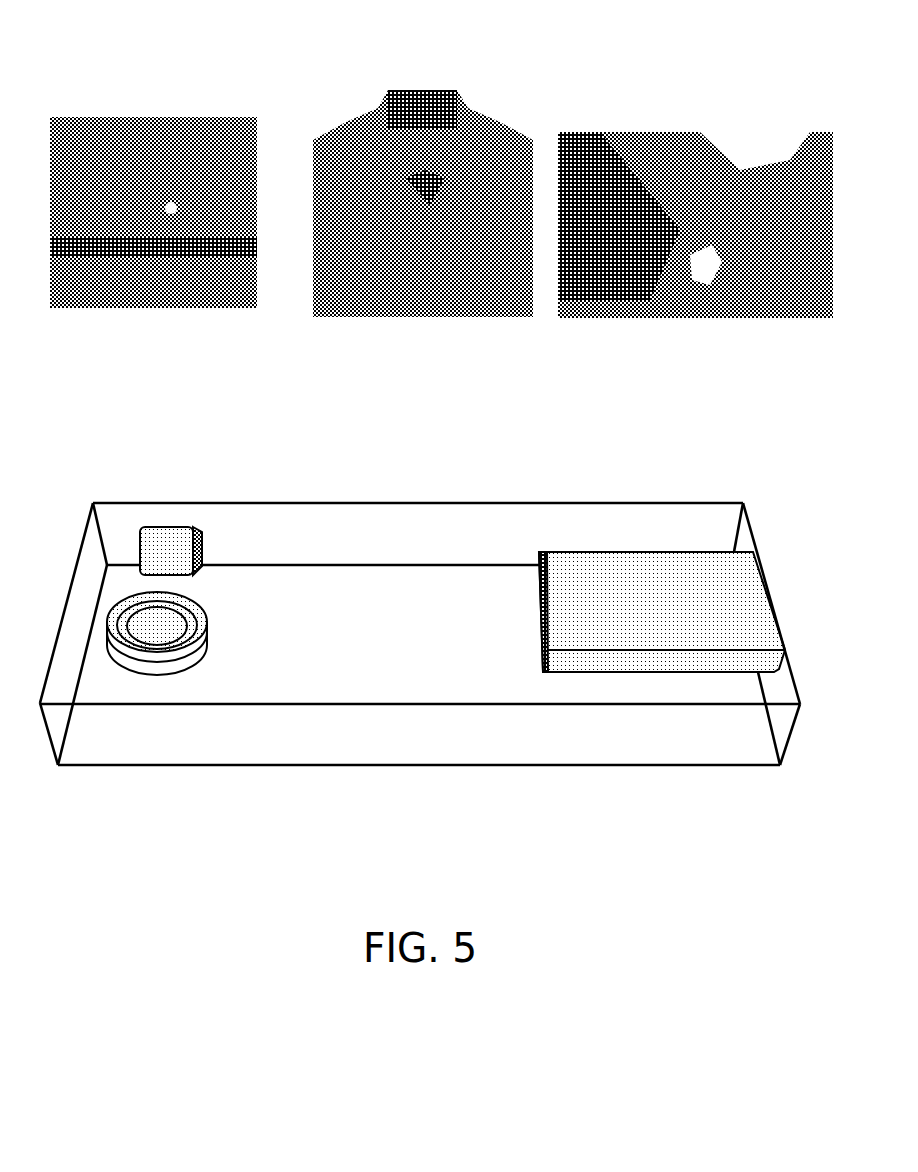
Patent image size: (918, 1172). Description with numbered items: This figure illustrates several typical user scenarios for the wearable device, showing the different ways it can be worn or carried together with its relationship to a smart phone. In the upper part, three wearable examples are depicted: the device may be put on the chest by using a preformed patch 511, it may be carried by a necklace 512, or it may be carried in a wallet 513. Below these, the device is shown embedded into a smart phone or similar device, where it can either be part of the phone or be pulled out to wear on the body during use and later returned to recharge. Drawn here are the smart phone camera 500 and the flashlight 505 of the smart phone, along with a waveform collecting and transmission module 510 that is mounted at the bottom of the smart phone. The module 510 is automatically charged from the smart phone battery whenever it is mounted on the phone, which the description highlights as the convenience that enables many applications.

The smart phone camera 500 is at (134, 599).
The flashlight of the smart phone 505 is at (199, 513).
The waveform collecting and transmission module 510 is at (594, 550).
The preformed patch 511 is at (115, 207).
The necklace 512 is at (423, 175).
The wallet 513 is at (707, 277).